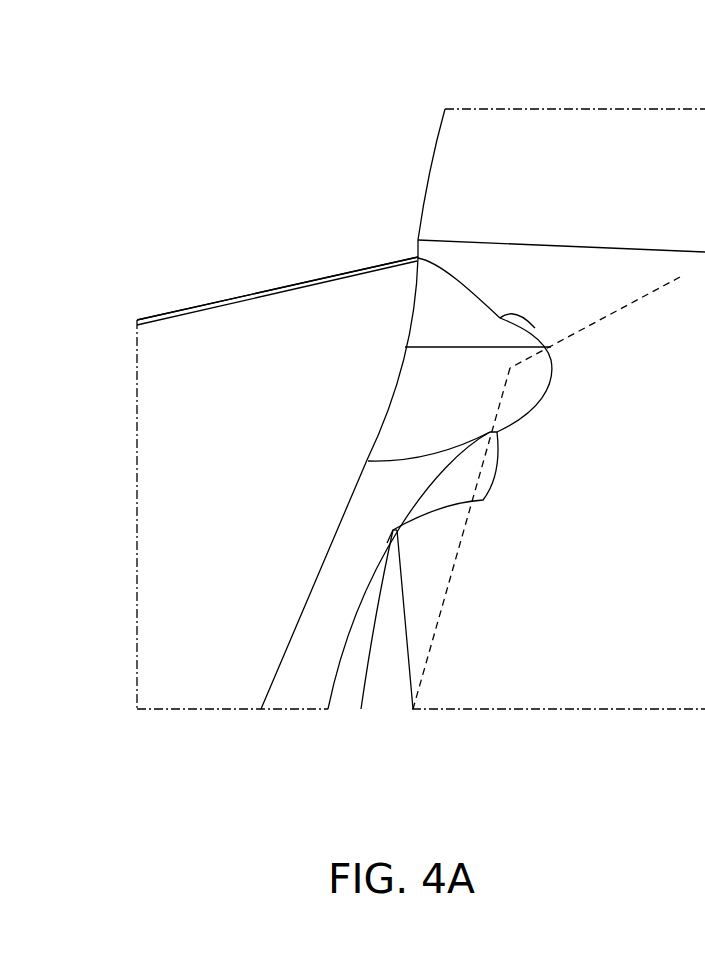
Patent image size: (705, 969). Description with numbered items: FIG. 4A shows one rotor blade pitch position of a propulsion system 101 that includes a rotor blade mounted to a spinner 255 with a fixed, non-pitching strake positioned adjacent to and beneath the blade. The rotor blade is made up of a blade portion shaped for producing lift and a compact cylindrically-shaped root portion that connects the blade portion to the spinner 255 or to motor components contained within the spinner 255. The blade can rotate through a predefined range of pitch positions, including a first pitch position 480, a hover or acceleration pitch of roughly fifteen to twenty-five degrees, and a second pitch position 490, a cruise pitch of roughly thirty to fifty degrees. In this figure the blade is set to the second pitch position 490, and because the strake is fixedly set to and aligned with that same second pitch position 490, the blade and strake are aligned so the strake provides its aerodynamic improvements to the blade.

The spinner 255 is at (580, 122).
The first pitch position 480 is at (603, 318).
The second pitch position 490 is at (445, 588).
The propulsion system 101 is at (610, 700).